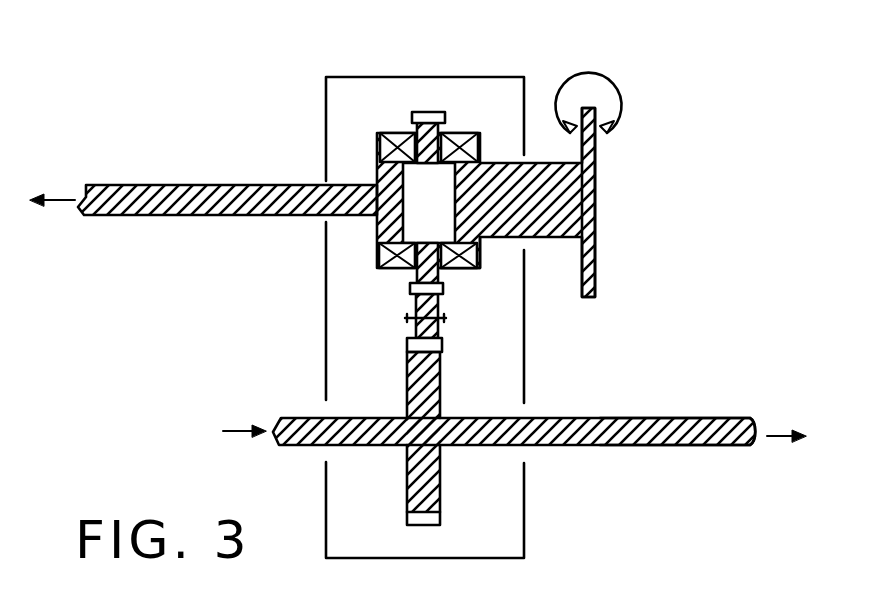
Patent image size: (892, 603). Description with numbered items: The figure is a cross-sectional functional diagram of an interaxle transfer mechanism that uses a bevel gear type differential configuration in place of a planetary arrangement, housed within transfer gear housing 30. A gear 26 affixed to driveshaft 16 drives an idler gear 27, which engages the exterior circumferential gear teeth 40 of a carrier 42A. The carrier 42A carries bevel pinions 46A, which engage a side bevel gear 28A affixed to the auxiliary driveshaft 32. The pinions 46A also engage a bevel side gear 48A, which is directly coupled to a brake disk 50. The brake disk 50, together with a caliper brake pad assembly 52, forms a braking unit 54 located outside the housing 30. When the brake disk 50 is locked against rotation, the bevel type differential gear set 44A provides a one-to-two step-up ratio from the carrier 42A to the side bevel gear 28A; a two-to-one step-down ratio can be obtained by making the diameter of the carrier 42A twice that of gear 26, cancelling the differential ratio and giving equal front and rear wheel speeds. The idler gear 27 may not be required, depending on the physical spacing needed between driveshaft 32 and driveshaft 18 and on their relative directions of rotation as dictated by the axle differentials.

The driveshaft 16 is at (308, 418).
The driveshaft 18 is at (713, 418).
The gear 26 is at (443, 378).
The idler gear 27 is at (405, 325).
The side bevel gear 28A is at (377, 165).
The transfer gear housing 30 is at (337, 77).
The auxiliary driveshaft 32 is at (193, 185).
The circumferential gear teeth 40 is at (410, 117).
The carrier 42A is at (452, 128).
The bevel type differential gear set 44A is at (430, 56).
The bevel pinions 46A is at (459, 133).
The bevel side gear 48A is at (476, 255).
The brake disk 50 is at (597, 143).
The caliper brake pad assembly 52 is at (618, 86).
The braking unit 54 is at (585, 58).